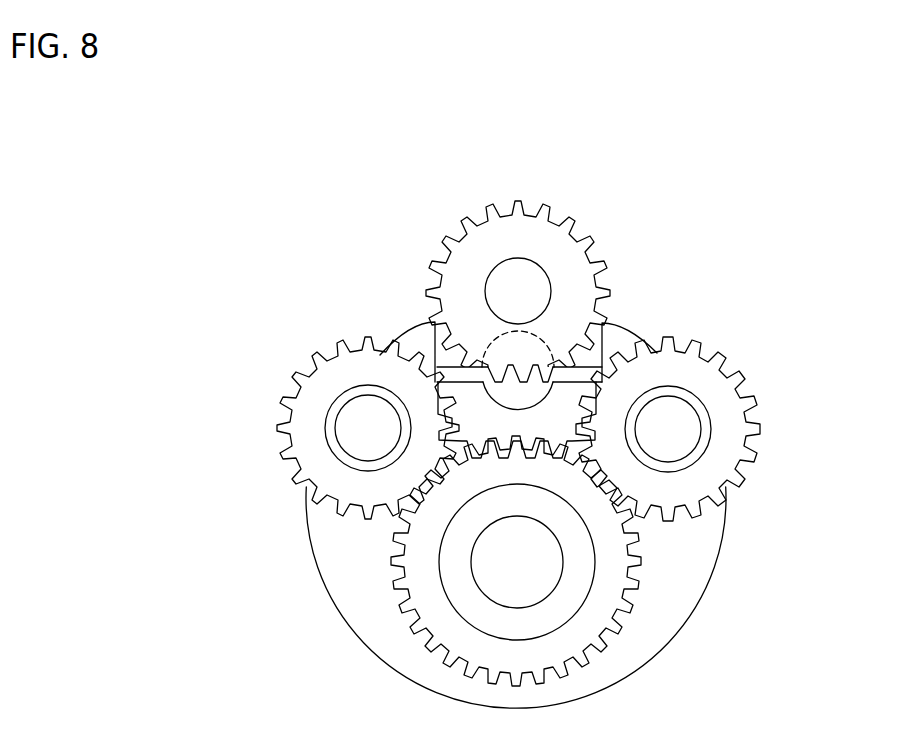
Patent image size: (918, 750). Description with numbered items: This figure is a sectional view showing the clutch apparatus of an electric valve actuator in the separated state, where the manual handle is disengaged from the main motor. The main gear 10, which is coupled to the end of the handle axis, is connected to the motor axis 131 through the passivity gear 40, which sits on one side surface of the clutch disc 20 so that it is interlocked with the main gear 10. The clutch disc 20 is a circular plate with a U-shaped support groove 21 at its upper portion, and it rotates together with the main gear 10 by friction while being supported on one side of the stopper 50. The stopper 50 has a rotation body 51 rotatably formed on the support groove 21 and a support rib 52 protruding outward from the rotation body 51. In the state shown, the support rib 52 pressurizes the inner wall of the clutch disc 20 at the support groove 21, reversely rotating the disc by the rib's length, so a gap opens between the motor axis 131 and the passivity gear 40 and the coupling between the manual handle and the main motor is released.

The main gear 10 is at (610, 573).
The clutch disc 20 is at (697, 543).
The support groove 21 is at (583, 357).
The passivity gear 40 is at (315, 402).
The stopper 50 is at (397, 216).
The rotation body 51 is at (515, 352).
The support rib 52 is at (453, 370).
The motor axis 131 is at (525, 278).